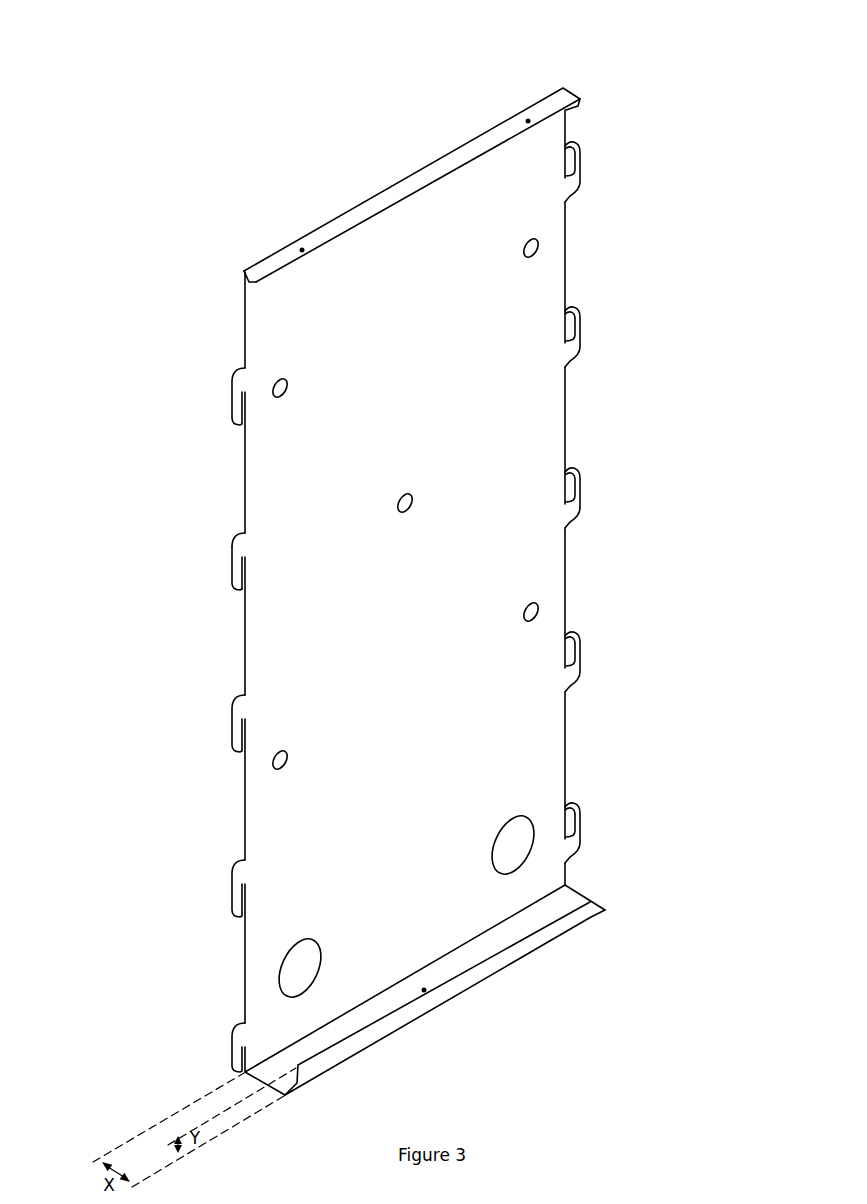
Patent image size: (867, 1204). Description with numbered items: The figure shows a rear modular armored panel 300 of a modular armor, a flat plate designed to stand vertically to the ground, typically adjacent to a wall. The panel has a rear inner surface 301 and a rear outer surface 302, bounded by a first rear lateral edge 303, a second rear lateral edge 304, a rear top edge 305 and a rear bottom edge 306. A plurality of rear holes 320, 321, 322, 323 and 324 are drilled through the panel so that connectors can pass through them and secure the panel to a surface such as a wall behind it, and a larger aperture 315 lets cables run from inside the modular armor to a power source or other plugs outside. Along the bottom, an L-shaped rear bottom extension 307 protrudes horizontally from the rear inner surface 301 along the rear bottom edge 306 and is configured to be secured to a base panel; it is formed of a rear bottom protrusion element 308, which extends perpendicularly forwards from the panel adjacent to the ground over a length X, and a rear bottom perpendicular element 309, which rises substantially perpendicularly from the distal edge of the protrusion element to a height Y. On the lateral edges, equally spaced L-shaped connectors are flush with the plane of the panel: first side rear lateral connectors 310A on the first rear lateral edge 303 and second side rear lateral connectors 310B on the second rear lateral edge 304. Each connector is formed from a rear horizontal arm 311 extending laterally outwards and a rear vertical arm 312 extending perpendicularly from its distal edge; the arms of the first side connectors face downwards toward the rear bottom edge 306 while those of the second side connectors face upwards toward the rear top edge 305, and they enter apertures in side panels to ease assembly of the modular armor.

The rear modular armored panel 300 is at (672, 128).
The rear inner surface 301 is at (391, 259).
The rear outer surface 302 is at (306, 211).
The first rear lateral edge 303 is at (245, 632).
The second rear lateral edge 304 is at (562, 583).
The rear top edge 305 is at (503, 138).
The rear bottom edge 306 is at (296, 1062).
The rear bottom extension 307 is at (228, 1084).
The rear bottom protrusion element 308 is at (588, 900).
The rear bottom perpendicular element 309 is at (603, 918).
The first side rear lateral connectors 310A is at (230, 400).
The second side rear lateral connectors 310B is at (590, 165).
The rear horizontal arm 311 is at (233, 544).
The rear vertical arm 312 is at (228, 562).
The aperture 315 is at (280, 978).
The rear hole 320 is at (275, 765).
The rear hole 321 is at (525, 617).
The rear hole 322 is at (398, 508).
The rear hole 323 is at (288, 392).
The rear hole 324 is at (524, 253).